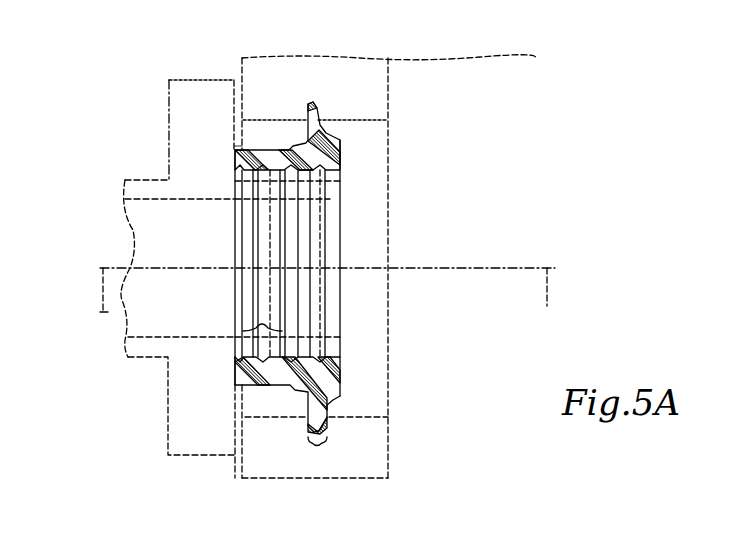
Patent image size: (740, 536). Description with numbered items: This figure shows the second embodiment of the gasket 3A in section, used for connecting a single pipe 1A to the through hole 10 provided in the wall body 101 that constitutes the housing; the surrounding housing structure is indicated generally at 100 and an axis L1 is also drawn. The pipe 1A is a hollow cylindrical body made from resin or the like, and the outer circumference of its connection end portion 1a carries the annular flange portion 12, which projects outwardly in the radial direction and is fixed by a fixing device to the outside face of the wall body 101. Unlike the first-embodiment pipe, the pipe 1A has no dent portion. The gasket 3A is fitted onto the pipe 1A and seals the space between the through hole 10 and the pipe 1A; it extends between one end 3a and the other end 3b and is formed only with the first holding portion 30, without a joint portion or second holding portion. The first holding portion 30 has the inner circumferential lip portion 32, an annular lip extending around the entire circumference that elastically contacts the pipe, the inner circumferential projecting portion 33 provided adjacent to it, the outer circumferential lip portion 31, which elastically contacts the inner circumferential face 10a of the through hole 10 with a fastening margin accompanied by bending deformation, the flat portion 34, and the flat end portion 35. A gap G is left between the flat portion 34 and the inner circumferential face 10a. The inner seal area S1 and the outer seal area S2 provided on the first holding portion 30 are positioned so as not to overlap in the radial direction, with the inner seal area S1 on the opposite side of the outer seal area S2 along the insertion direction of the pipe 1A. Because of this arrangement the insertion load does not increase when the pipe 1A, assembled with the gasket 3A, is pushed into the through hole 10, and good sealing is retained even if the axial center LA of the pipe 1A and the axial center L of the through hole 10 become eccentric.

The reference line 100 is at (236, 79).
The wall body 101 is at (267, 73).
The gasket 3A is at (319, 88).
The inner circumferential face of the through hole 10a is at (378, 110).
The through hole 10 is at (238, 130).
The gap G is at (242, 145).
The flange portion 12 is at (169, 142).
The pipe 1A is at (113, 170).
The inner circumferential lip portion 32 is at (281, 180).
The connection end portion 1a is at (323, 198).
The other end of the gasket 3b is at (236, 325).
The inner seal area S1 is at (262, 317).
The one end of the gasket 3a is at (340, 291).
The inner circumferential projecting portion 33 is at (302, 360).
The end portion 35 is at (237, 369).
The flat portion 34 is at (257, 384).
The first holding portion 30 is at (238, 433).
The outer circumferential lip portion 31 is at (318, 420).
The outer seal area S2 is at (316, 453).
The axial center of the through hole L is at (332, 298).
The axial center of the pipe LA is at (547, 298).
The nozzle axis L1 is at (103, 298).